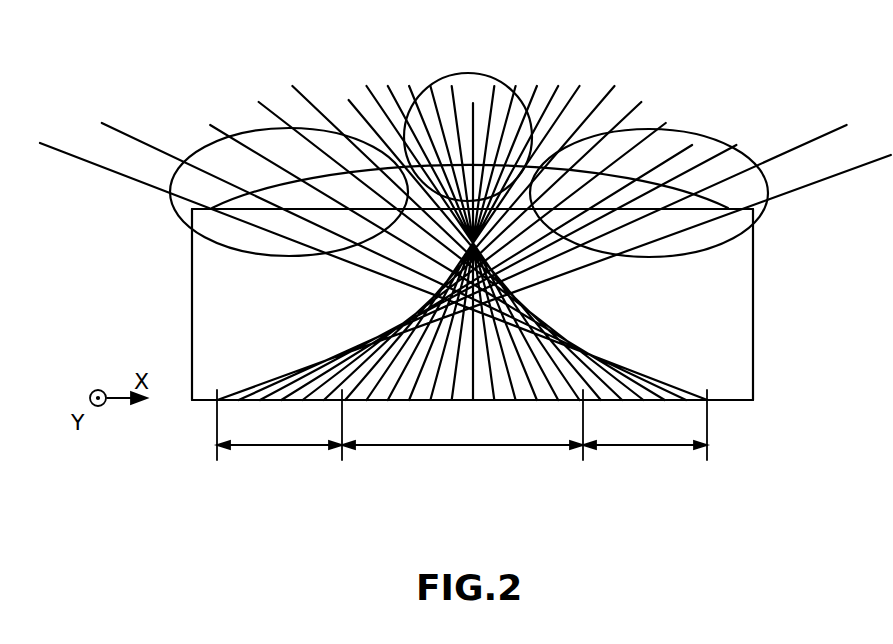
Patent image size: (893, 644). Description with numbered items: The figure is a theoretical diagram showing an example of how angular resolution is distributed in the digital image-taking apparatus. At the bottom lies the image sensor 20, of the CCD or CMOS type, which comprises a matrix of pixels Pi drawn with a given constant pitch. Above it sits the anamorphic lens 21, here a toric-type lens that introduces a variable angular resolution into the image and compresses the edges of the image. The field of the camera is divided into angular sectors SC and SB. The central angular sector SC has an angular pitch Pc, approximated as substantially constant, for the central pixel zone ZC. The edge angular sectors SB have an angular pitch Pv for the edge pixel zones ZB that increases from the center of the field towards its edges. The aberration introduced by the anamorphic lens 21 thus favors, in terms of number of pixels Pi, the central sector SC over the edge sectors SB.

The image sensor 20 is at (262, 398).
The anamorphic lens 21 is at (698, 206).
The central angular sector SC is at (462, 83).
The edge angular sectors SB is at (195, 232).
The edge pixel zones ZB is at (462, 432).
The central pixel zone ZC is at (462, 432).
The pixels Pi is at (442, 399).